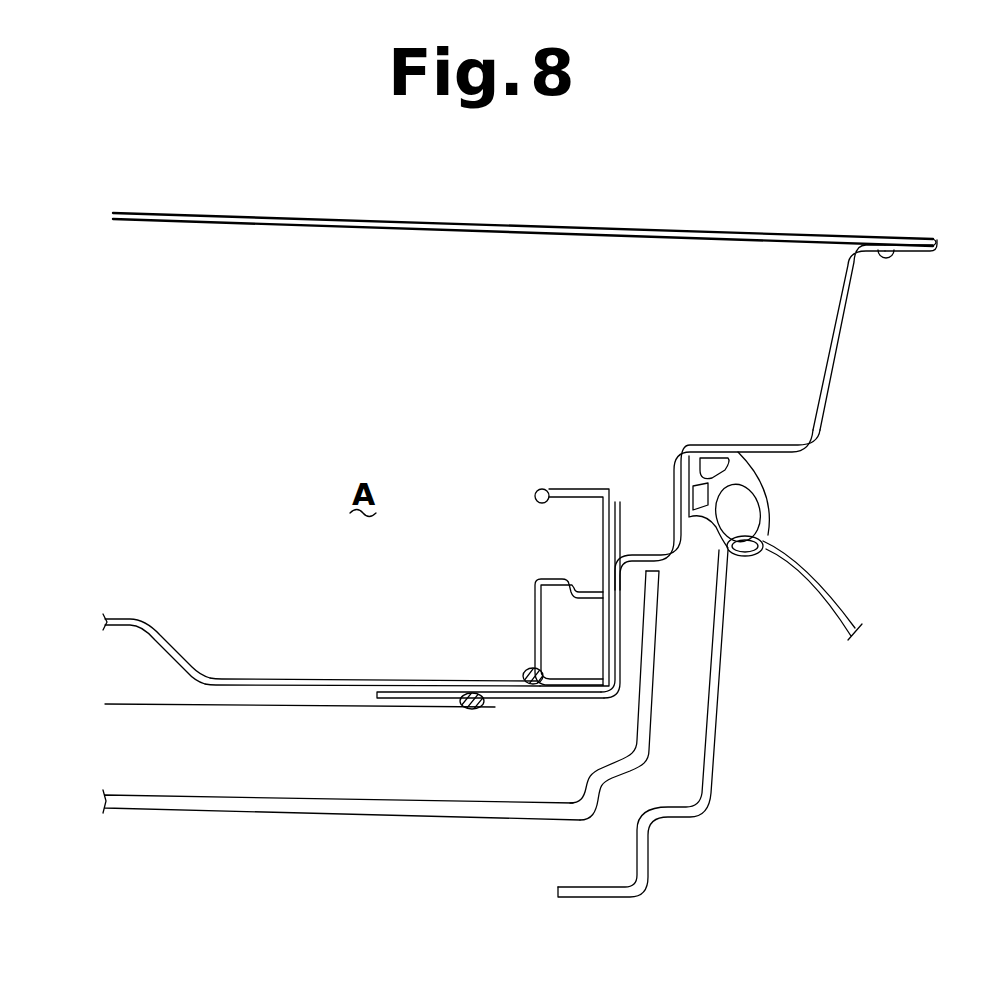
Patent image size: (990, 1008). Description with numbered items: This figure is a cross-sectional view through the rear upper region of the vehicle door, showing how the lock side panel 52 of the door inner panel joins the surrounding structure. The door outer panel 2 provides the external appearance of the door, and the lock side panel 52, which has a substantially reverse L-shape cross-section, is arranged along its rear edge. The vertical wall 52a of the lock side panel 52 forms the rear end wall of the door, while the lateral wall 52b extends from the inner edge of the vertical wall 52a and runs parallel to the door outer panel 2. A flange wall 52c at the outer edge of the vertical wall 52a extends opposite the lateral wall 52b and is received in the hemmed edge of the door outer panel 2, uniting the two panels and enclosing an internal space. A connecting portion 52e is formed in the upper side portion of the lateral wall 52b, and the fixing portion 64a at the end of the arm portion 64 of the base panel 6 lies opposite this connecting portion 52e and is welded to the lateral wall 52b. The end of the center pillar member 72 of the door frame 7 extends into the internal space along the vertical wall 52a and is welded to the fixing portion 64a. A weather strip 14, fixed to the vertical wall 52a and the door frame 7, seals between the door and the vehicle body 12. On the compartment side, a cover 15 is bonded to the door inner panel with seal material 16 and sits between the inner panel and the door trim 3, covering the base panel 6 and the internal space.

The door outer panel 2 is at (658, 226).
The flange wall 52c is at (912, 240).
The vertical wall 52a is at (834, 345).
The lock side panel 52 is at (698, 440).
The lateral wall 52b is at (530, 704).
The connecting portion 52e is at (413, 700).
The weather strip 14 is at (768, 507).
The door frame 7 is at (549, 482).
The center pillar member 72 is at (543, 580).
The arm portion 64 is at (167, 638).
The base panel 6 is at (223, 670).
The fixing portion 64a is at (495, 683).
The seal material 16 is at (462, 712).
The cover 15 is at (290, 710).
The door trim 3 is at (334, 822).
The vehicle body 12 is at (717, 703).